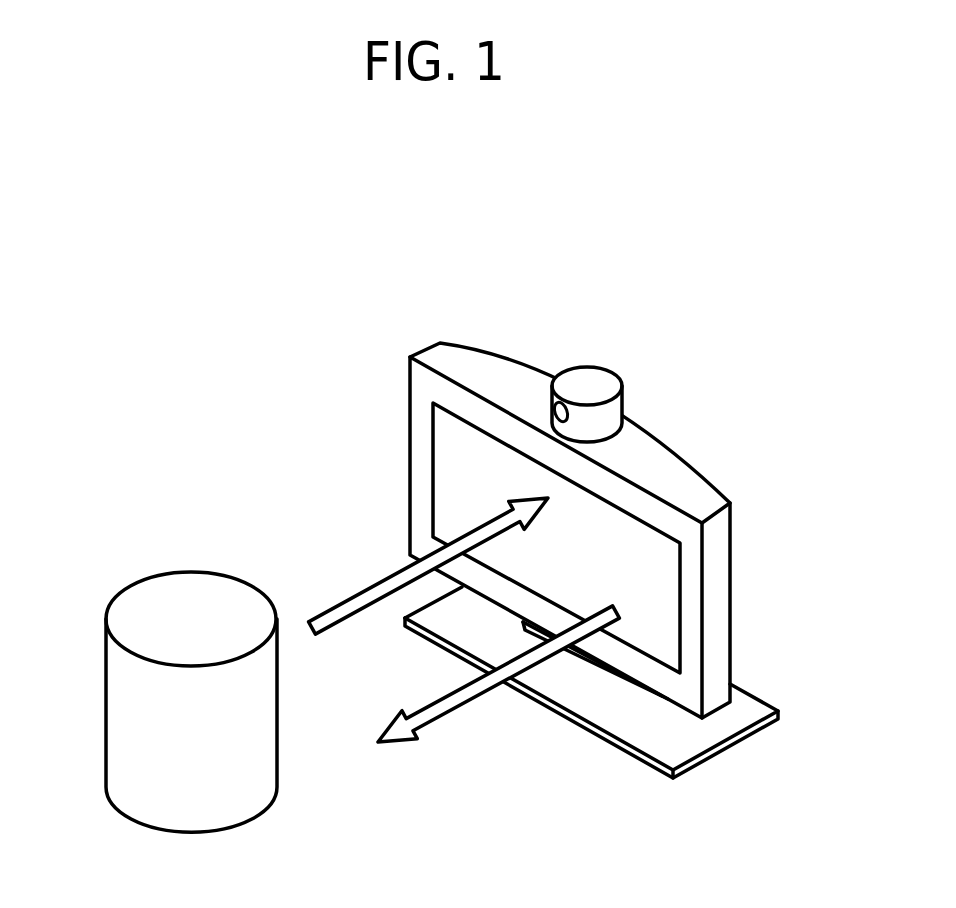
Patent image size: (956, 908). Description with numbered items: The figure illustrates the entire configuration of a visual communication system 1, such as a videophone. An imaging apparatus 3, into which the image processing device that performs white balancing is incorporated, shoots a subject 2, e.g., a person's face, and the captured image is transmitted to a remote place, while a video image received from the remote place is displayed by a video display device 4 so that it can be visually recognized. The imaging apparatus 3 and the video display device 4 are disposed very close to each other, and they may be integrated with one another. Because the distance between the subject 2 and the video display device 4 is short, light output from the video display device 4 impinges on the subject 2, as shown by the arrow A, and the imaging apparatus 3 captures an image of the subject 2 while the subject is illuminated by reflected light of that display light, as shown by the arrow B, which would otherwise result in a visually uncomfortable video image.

The visual communication system 1 is at (768, 306).
The subject 2 is at (118, 695).
The imaging apparatus 3 is at (588, 377).
The video display device 4 is at (723, 547).
The arrow A is at (458, 701).
The arrow B is at (357, 597).